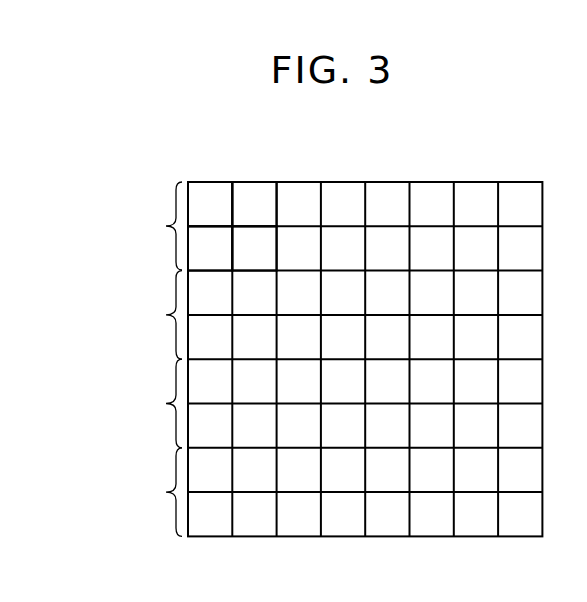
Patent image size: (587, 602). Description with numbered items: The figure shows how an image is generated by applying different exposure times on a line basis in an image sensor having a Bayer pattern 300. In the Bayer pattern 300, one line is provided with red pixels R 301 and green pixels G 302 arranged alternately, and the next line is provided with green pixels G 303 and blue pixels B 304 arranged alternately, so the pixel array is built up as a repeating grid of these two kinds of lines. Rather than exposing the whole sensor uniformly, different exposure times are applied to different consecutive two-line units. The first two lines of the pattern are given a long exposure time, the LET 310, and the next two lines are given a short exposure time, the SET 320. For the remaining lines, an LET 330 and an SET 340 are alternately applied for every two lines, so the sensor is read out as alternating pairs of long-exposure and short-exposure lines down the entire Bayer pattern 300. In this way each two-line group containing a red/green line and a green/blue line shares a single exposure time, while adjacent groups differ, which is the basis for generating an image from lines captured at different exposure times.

The Bayer pattern 300 is at (478, 181).
The red pixel R 301 is at (205, 184).
The green pixel G 302 is at (253, 192).
The green pixel G 303 is at (191, 252).
The blue pixel B 304 is at (267, 237).
The LET 310 is at (113, 226).
The SET 320 is at (113, 315).
The LET 330 is at (113, 403).
The SET 340 is at (113, 492).